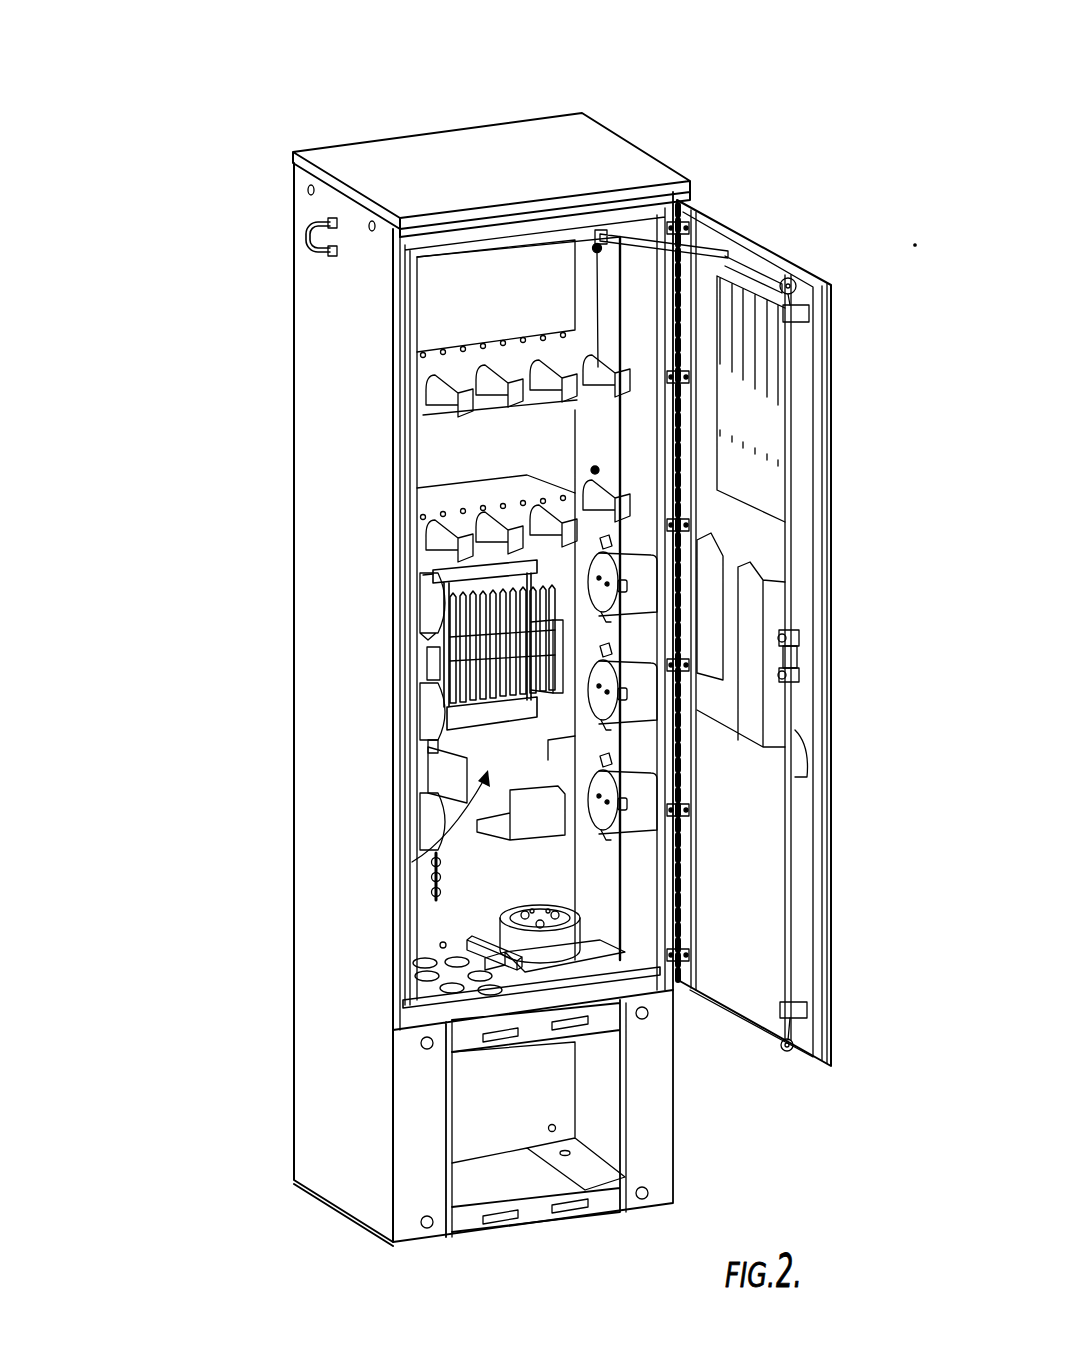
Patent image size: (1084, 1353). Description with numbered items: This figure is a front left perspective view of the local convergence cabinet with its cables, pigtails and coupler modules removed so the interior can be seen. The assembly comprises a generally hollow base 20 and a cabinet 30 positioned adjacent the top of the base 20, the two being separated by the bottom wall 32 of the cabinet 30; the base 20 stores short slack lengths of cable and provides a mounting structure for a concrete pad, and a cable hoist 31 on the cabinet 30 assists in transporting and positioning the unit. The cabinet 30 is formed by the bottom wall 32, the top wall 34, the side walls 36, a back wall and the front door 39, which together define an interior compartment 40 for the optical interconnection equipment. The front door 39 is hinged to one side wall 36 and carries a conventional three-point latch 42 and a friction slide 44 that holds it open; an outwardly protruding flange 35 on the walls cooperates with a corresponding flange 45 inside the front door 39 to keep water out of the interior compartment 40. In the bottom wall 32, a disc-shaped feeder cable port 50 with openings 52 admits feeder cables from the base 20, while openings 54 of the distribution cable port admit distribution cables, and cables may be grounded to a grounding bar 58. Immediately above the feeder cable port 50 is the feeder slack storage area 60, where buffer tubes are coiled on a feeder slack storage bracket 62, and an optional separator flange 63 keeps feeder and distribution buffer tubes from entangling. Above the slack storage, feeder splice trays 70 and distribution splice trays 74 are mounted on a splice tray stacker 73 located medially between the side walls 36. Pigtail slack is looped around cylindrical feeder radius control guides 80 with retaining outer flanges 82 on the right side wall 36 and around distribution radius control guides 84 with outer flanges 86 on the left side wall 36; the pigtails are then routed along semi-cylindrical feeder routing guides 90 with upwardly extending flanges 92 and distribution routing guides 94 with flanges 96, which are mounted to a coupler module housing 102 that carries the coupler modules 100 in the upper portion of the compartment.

The base 20 is at (266, 1109).
The cabinet 30 is at (215, 398).
The cable hoist 31 is at (298, 237).
The bottom wall 32 is at (397, 970).
The top wall 34 is at (432, 162).
The outwardly protruding flange 35 is at (548, 233).
The side wall 36 is at (318, 642).
The front door 39 is at (832, 470).
The interior compartment 40 is at (448, 833).
The three-point latch 42 is at (793, 655).
The friction slide 44 is at (705, 242).
The flange 45 is at (826, 870).
The feeder cable port 50 is at (625, 995).
The opening 52 is at (578, 917).
The opening 54 is at (403, 1000).
The grounding bar 58 is at (435, 880).
The feeder slack storage area 60 is at (550, 748).
The feeder slack storage bracket 62 is at (565, 848).
The separator flange 63 is at (448, 773).
The feeder splice tray 70 is at (557, 620).
The splice tray stacker 73 is at (446, 595).
The distribution splice tray 74 is at (448, 657).
The feeder radius control guide 80 is at (637, 568).
The outer flange 82 is at (620, 588).
The distribution radius control guide 84 is at (445, 720).
The outer flange 86 is at (427, 748).
The feeder routing guide 90 is at (597, 246).
The outer flange 92 is at (627, 378).
The distribution routing guide 94 is at (432, 530).
The outer flange 96 is at (440, 568).
The coupler module 100 is at (450, 305).
The coupler module housing 102 is at (515, 357).